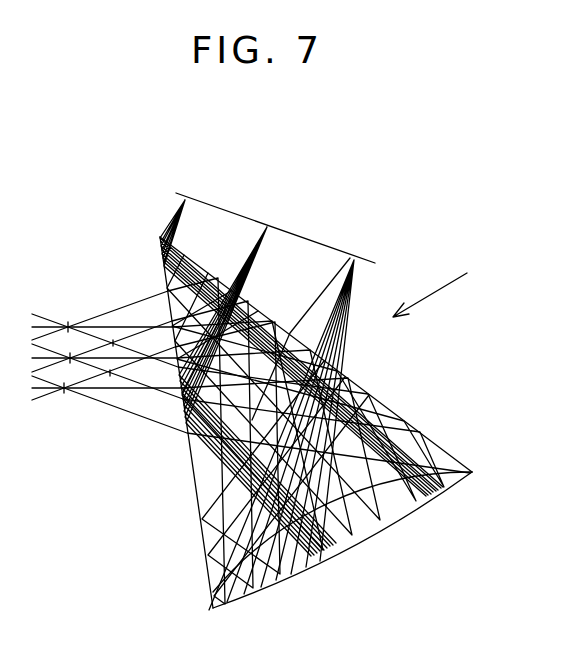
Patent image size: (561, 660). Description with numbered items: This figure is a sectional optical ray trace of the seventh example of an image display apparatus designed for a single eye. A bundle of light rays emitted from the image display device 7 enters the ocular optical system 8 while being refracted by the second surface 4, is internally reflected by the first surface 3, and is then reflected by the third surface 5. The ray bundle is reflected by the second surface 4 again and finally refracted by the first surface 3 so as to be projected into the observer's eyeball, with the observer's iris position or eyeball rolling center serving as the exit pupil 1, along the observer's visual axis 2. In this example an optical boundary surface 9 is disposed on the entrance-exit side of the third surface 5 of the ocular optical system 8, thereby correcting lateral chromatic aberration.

The observer's pupil position 1 is at (65, 372).
The observer's visual axis 2 is at (122, 360).
The first surface of ocular optical system 3 is at (200, 500).
The second surface of ocular optical system 4 is at (385, 405).
The third surface of ocular optical system 5 is at (362, 542).
The image display device 7 is at (320, 243).
The ocular optical system 8 is at (442, 285).
The optical surface 9 is at (397, 525).